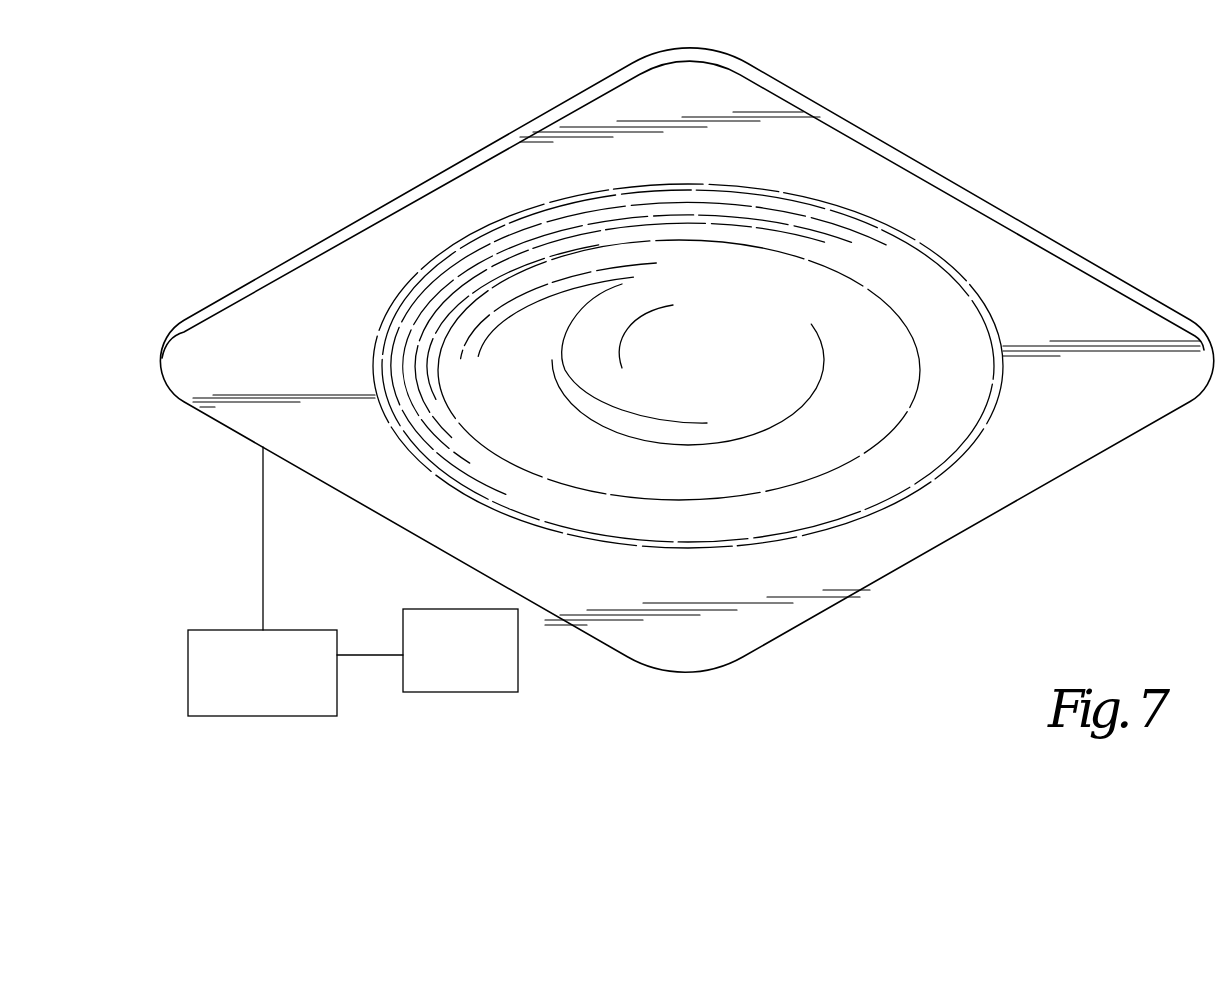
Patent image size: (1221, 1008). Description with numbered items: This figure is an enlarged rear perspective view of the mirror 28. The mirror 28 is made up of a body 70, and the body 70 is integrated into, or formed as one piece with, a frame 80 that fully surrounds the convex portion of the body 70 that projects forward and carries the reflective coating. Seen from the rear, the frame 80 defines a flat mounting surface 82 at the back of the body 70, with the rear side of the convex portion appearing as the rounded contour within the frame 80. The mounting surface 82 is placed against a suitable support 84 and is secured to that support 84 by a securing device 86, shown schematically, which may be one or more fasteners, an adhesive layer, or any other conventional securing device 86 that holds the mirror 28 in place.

The body 70 is at (932, 295).
The mirror 28 is at (967, 467).
The frame 80 is at (1090, 406).
The mounting surface 82 is at (885, 552).
The support 84 is at (476, 678).
The securing device 86 is at (326, 702).